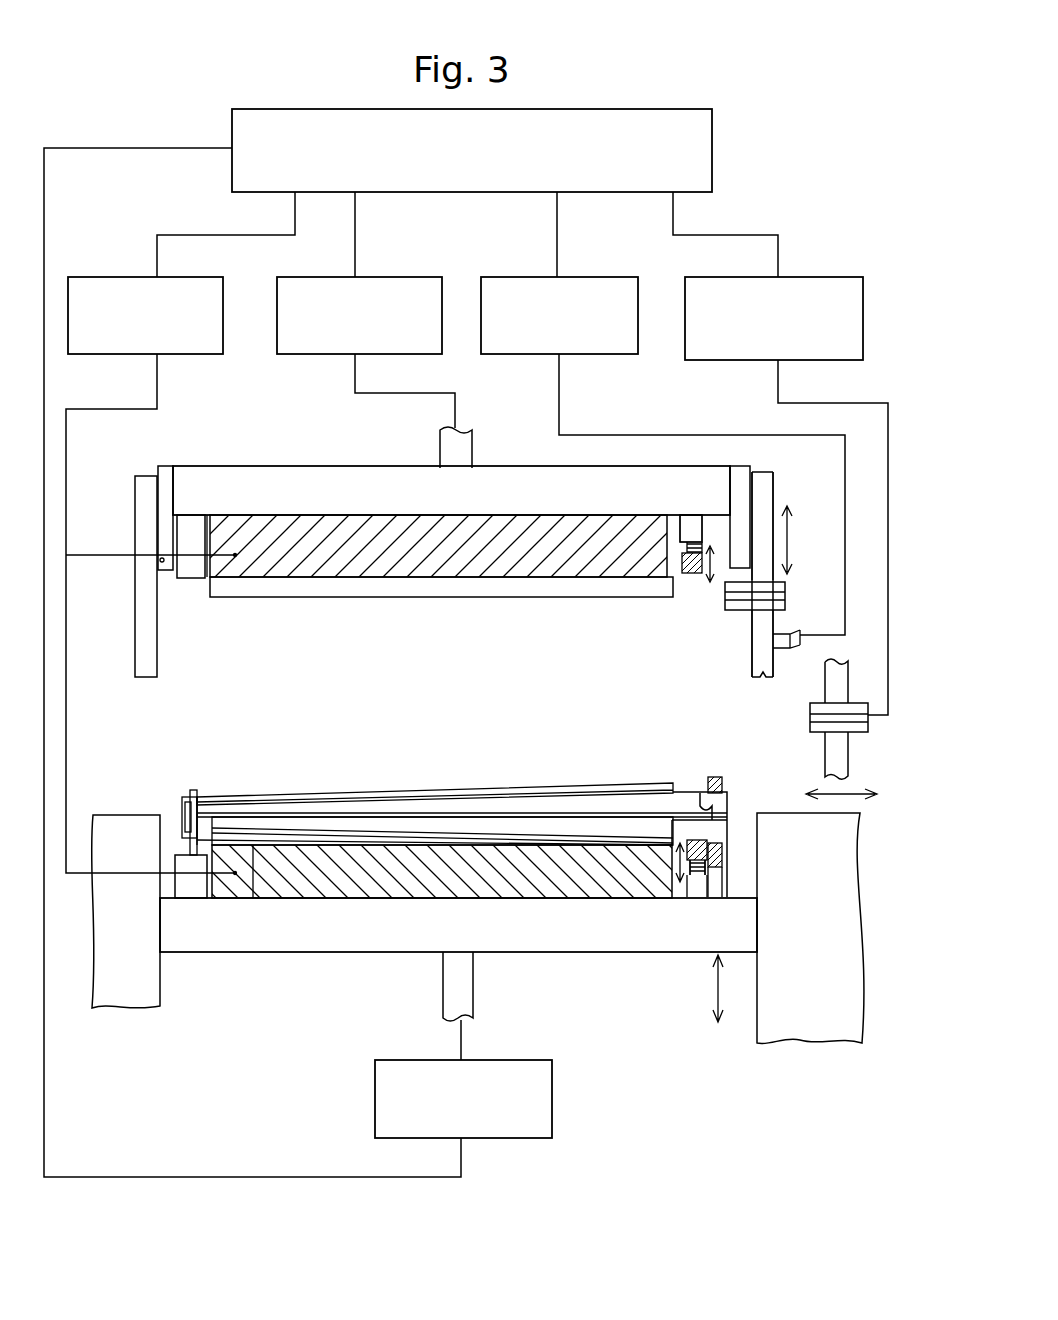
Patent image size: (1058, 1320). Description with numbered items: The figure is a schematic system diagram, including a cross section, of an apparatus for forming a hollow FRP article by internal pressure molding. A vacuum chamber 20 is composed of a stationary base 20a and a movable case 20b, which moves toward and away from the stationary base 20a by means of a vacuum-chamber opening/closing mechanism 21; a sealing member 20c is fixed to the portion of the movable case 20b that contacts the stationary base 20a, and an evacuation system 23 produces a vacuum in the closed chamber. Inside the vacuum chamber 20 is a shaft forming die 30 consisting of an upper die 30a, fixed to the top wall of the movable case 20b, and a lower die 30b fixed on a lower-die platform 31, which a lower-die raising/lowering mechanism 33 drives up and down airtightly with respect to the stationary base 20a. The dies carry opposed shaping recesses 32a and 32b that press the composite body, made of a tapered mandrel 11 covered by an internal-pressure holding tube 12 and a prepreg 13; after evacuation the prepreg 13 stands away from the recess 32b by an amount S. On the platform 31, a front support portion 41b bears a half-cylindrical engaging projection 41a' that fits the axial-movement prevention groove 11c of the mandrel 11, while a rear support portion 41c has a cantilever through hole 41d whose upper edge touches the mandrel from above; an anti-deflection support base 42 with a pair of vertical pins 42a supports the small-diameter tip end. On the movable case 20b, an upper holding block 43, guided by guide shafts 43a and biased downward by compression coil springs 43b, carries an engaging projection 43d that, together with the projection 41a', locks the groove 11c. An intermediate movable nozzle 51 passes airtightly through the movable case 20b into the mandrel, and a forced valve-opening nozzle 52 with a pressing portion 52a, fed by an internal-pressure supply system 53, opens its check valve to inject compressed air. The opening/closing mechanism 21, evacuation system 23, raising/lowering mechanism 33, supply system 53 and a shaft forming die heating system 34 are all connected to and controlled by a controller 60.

The controller 60 is at (712, 148).
The shaft forming die heating system 34 is at (187, 354).
The vacuum-chamber opening/closing mechanism 21 is at (322, 354).
The evacuation system 23 is at (585, 354).
The internal-pressure supply system 53 is at (735, 360).
The lower-die raising/lowering mechanism 33 is at (552, 1108).
The shaft forming die 30 is at (442, 682).
The upper die 30a is at (390, 567).
The lower die 30b is at (393, 863).
The shaping recess 32a is at (340, 580).
The shaping recess 32b is at (462, 841).
The lower-die platform 31 is at (342, 932).
The guide shaft 43a is at (687, 545).
The compression coil spring 43b is at (691, 528).
The upper holding block 43 is at (686, 583).
The half-cylindrical engaging projection 43d is at (693, 578).
The intermediate movable nozzle 51 is at (737, 608).
The vacuum chamber 20 is at (708, 616).
The stationary base 20a is at (767, 832).
The movable case 20b is at (753, 665).
The sealing member 20c is at (763, 688).
The forced valve-opening nozzle 52 is at (863, 733).
The pressing portion 52a is at (853, 772).
The anti-deflection support base 42 is at (182, 838).
The vertical pin 42a is at (195, 788).
The cantilever through hole 41d is at (703, 797).
The half-cylindrical engaging projection 41a' is at (635, 898).
The axial-movement prevention groove 11c is at (697, 867).
The front support portion 41b is at (693, 888).
The rear support portion 41c is at (717, 890).
The mandrel 11 is at (432, 830).
The internal-pressure holding tube 12 is at (455, 843).
The prepreg 13 is at (485, 850).
The amount S is at (260, 847).